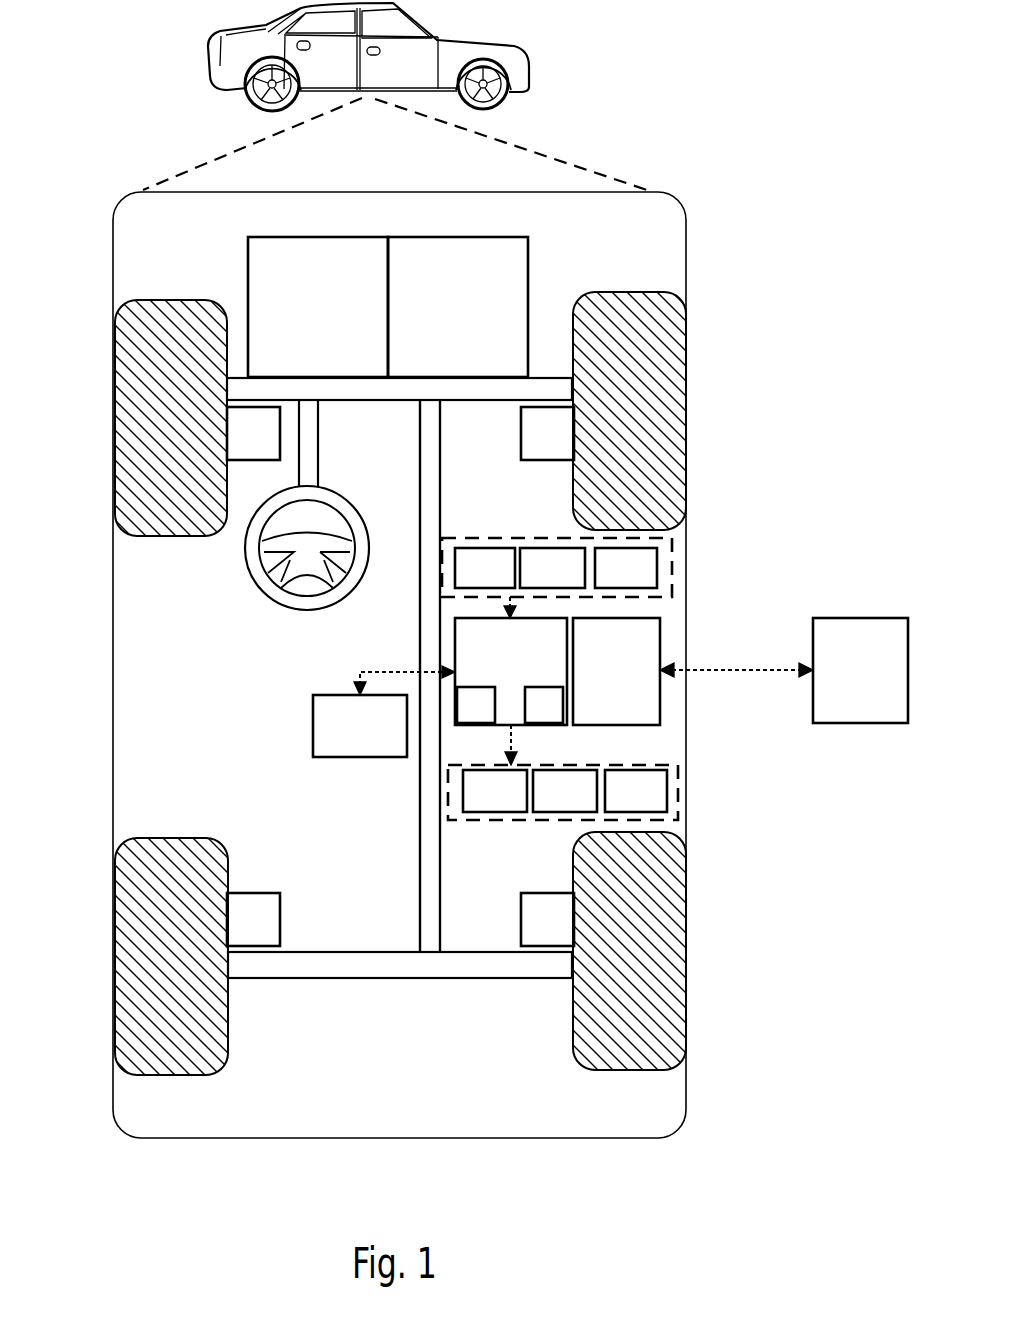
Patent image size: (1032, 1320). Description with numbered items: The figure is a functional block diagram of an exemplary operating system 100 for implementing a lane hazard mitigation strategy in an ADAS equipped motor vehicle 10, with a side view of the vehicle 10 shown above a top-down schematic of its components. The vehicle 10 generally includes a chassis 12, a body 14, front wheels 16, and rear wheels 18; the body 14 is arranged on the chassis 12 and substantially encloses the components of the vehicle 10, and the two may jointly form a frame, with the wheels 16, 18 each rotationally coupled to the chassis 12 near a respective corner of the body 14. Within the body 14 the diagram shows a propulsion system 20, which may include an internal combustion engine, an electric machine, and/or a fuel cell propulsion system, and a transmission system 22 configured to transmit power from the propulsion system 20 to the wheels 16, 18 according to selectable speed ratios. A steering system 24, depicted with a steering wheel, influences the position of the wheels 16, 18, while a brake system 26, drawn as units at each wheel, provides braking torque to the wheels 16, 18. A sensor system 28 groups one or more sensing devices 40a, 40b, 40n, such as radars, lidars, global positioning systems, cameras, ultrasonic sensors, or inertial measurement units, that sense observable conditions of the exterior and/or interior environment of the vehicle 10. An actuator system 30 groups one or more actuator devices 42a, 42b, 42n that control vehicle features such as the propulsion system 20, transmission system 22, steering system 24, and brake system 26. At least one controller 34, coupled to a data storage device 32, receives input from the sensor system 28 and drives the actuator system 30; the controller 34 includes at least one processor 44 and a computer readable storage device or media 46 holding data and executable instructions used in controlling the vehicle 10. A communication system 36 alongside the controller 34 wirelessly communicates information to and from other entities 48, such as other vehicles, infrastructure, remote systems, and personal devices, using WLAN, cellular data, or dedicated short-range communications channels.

The motor vehicle 10 is at (207, 67).
The operating system 100 is at (415, 638).
The chassis 12 is at (420, 872).
The body 14 is at (113, 647).
The front wheels 16 is at (167, 300).
The rear wheels 18 is at (190, 1075).
The propulsion system 20 is at (318, 307).
The transmission system 22 is at (458, 307).
The steering system 24 is at (342, 427).
The brake system 26 is at (400, 676).
The sensor system 28 is at (557, 540).
The actuator system 30 is at (563, 819).
The data storage device 32 is at (360, 726).
The controller 34 is at (511, 671).
The communication system 36 is at (616, 671).
The sensing device 40a is at (485, 568).
The sensing device 40b is at (552, 568).
The sensing device 40n is at (626, 568).
The actuator device 42a is at (495, 791).
The actuator device 42b is at (565, 791).
The actuator device 42n is at (636, 791).
The processor 44 is at (476, 705).
The computer readable storage device or media 46 is at (544, 705).
The other entities 48 is at (860, 670).